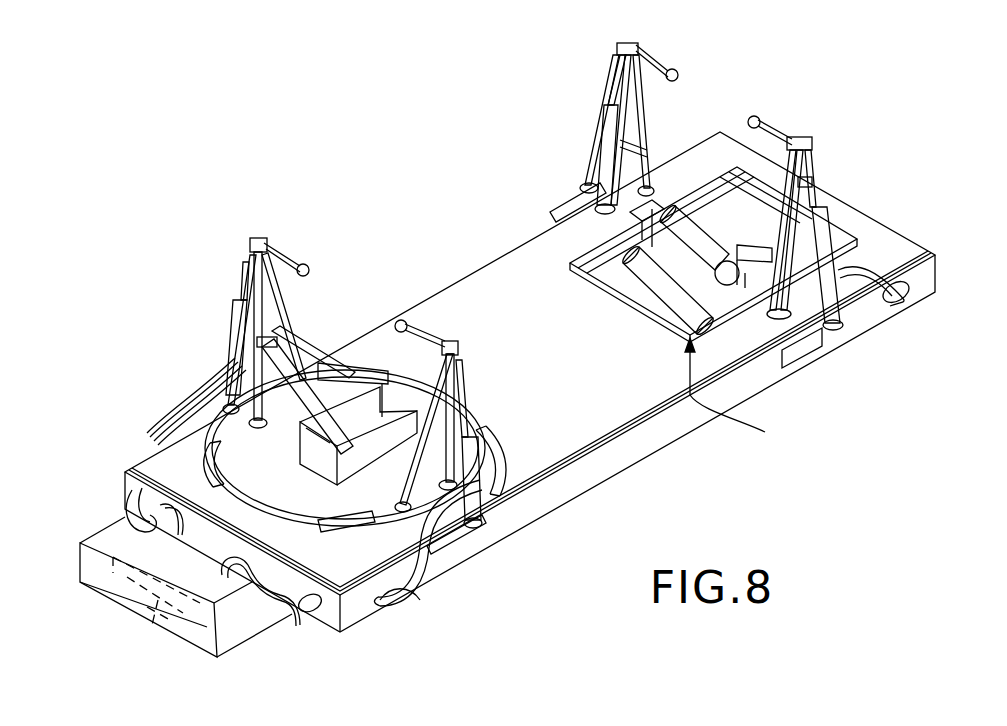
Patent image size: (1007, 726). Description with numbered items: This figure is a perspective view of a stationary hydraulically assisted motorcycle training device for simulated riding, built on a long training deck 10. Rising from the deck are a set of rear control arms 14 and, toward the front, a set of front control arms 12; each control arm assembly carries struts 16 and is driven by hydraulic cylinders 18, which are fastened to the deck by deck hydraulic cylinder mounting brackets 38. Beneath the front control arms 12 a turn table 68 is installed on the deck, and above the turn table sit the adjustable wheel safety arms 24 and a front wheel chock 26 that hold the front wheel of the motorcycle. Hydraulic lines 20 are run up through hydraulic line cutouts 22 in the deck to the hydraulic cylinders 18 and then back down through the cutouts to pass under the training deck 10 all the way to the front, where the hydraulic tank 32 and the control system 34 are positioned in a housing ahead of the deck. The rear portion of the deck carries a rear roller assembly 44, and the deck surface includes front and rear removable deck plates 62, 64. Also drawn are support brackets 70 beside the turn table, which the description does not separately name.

The training deck 10 is at (635, 452).
The front control arms 12 is at (248, 258).
The rear control arms 14 is at (612, 72).
The struts 16 is at (297, 262).
The hydraulic cylinders 18 is at (237, 325).
The hydraulic lines 20 is at (656, 140).
The hydraulic line cutouts 22 is at (903, 290).
The adjustable wheel safety arms 24 is at (283, 345).
The front wheel chock 26 is at (383, 368).
The hydraulic tank 32 is at (188, 658).
The control system 34 is at (160, 636).
The deck hydraulic cylinder mounting brackets 38 is at (575, 200).
The rear roller assembly 44 is at (736, 399).
The front removable deck plate 62 is at (575, 262).
The rear removable deck plate 64 is at (718, 140).
The turn table 68 is at (345, 451).
The support bracket 70 is at (208, 440).